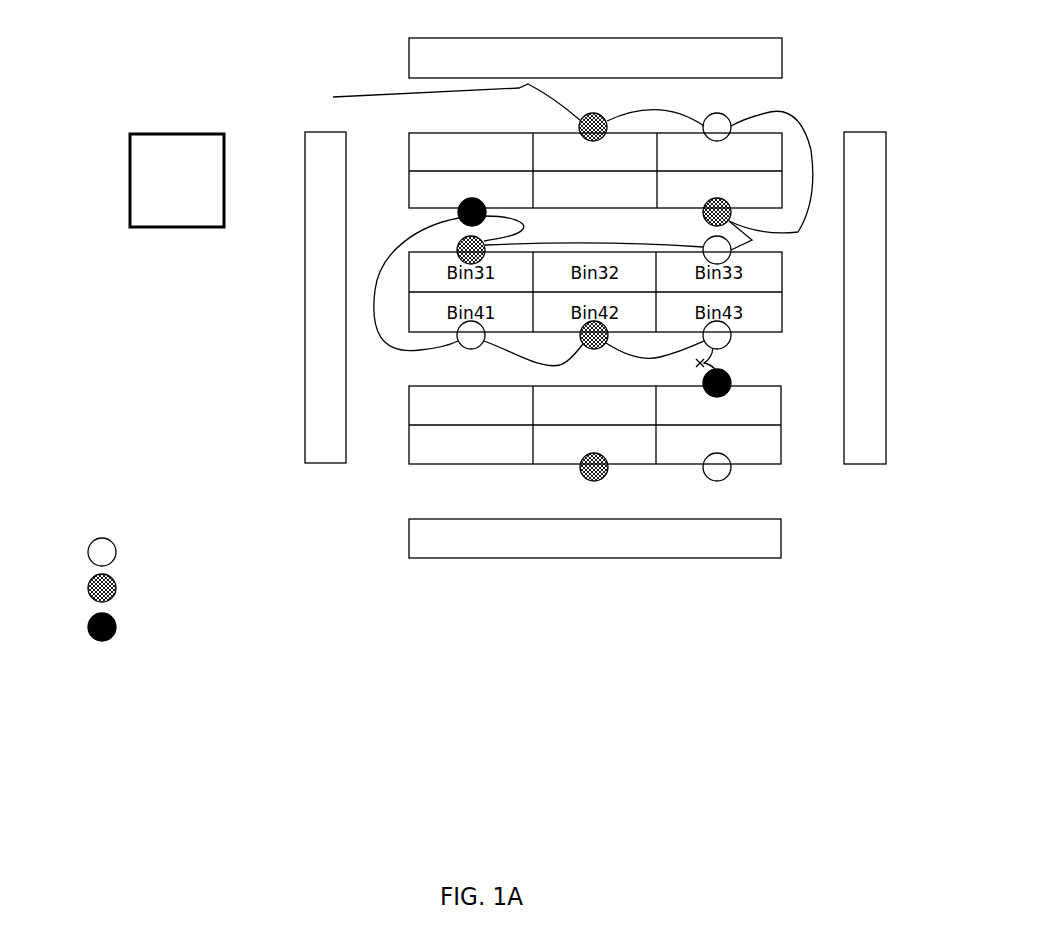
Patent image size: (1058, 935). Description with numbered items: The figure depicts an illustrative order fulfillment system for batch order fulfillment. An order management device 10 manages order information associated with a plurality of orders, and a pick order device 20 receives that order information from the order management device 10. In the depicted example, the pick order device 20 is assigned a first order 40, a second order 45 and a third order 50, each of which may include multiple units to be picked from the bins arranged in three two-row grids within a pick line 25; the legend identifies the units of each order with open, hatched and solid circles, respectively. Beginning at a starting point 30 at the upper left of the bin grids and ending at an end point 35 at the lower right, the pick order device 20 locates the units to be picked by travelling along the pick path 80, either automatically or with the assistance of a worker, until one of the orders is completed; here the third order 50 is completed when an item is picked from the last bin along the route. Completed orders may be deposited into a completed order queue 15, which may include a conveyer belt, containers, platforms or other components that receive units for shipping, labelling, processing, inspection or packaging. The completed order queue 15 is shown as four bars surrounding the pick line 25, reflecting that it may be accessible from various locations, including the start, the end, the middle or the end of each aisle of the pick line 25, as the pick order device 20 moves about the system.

The order management device 10 is at (168, 189).
The completed order queue 15 is at (523, 37).
The pick order device 20 is at (335, 108).
The pick line 25 is at (830, 88).
The starting point 30 is at (410, 148).
The end point 35 is at (785, 467).
The first order 40 is at (87, 550).
The second order 45 is at (87, 588).
The third order 50 is at (87, 625).
The pick path 80 is at (757, 113).